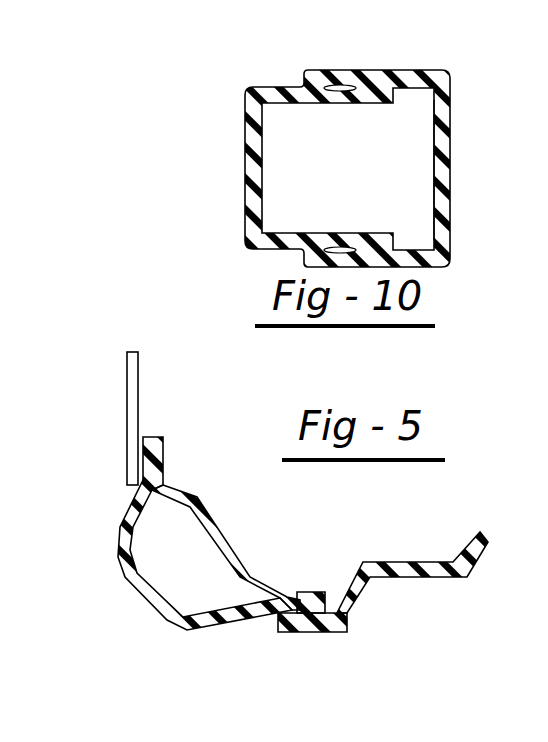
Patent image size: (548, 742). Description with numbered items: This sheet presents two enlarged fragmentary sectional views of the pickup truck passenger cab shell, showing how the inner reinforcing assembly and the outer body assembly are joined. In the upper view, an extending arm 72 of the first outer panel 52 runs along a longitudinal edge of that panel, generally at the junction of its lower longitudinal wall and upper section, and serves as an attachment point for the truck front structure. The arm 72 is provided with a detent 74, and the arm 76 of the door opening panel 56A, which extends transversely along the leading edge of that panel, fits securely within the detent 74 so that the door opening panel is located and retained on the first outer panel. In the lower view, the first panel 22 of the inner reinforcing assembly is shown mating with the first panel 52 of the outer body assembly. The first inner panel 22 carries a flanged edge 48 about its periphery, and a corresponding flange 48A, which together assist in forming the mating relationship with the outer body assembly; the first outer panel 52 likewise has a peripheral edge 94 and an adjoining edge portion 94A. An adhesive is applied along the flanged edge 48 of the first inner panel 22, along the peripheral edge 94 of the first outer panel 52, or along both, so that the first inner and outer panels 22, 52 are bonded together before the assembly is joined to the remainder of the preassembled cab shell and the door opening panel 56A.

In FIG. 10, the arm 72 is at (400, 80).
In FIG. 10, the detent 74 is at (326, 178).
In FIG. 10, the arm 76 is at (434, 186).
In FIG. 5, the first panel 22 is at (183, 487).
In FIG. 5, the flanged edge 48 is at (307, 595).
In FIG. 5, the clip head 48A is at (147, 440).
In FIG. 5, the first panel 52 is at (120, 558).
In FIG. 5, the door opening panel 56A is at (427, 518).
In FIG. 5, the peripheral edge 94 is at (300, 633).
In FIG. 5, the slot wall 94A is at (140, 446).